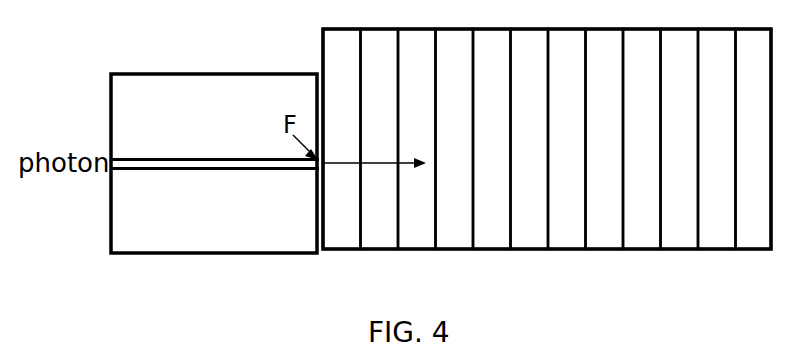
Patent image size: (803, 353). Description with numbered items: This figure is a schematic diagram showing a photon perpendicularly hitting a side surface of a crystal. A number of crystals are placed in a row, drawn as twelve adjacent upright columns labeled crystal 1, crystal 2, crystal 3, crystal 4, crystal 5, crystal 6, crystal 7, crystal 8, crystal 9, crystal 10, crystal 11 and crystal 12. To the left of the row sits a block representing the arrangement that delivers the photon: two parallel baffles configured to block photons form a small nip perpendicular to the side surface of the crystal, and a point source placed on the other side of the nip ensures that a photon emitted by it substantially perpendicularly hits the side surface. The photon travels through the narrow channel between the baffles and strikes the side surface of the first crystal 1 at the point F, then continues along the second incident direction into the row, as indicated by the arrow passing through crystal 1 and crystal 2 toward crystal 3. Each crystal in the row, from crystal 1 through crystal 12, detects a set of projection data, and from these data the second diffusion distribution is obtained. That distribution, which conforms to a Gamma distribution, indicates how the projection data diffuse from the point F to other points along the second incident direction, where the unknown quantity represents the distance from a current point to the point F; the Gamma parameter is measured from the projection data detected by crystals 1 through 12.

The crystal 1 is at (342, 139).
The crystal 2 is at (380, 139).
The crystal 3 is at (417, 139).
The crystal 4 is at (455, 139).
The crystal 5 is at (492, 139).
The crystal 6 is at (530, 139).
The crystal 7 is at (567, 139).
The crystal 8 is at (605, 139).
The crystal 9 is at (642, 139).
The crystal 10 is at (680, 139).
The crystal 11 is at (717, 139).
The crystal 12 is at (754, 139).